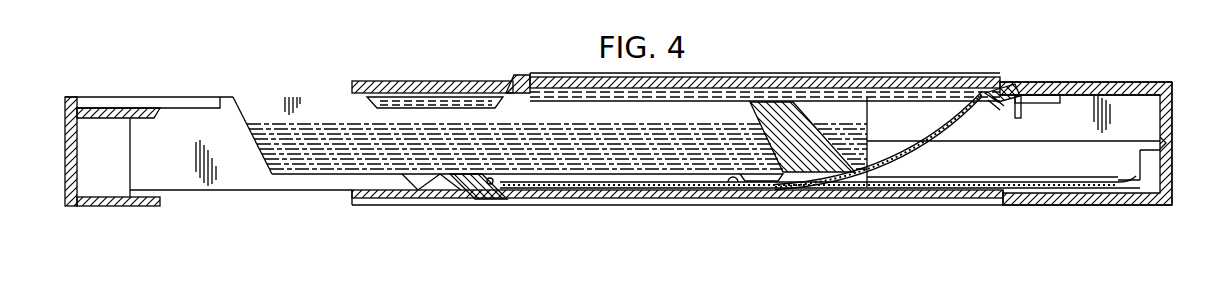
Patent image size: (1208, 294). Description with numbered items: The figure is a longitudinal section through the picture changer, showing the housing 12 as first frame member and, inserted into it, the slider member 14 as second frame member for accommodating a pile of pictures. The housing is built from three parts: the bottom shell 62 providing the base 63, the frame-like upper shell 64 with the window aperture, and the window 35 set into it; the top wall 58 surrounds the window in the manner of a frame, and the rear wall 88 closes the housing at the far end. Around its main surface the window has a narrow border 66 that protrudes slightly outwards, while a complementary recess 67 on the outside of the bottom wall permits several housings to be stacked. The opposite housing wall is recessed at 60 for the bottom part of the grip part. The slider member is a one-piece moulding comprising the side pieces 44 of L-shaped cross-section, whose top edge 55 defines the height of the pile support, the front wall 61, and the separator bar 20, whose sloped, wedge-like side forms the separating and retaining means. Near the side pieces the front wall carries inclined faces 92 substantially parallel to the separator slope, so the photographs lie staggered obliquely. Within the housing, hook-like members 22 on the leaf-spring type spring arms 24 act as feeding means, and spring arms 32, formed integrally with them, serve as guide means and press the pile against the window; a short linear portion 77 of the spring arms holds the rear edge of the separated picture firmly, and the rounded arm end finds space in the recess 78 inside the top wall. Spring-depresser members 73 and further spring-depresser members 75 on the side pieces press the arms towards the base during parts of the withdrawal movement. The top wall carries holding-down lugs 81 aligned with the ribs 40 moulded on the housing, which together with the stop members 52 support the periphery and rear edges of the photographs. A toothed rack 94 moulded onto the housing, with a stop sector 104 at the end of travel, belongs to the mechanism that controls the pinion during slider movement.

The housing 12 is at (1092, 78).
The slider member 14 is at (226, 196).
The separator bar 20 is at (826, 101).
The hook-like members 22 is at (487, 185).
The spring arms 24 is at (591, 189).
The spring arms 32 is at (924, 150).
The window 35 is at (790, 92).
The ribs 40 is at (1058, 104).
The side pieces 44 is at (314, 100).
The stop members 52 is at (1012, 119).
The top edge 55 is at (258, 97).
The top wall 58 is at (1042, 82).
The recess 60 is at (400, 200).
The front wall 61 is at (66, 160).
The bottom shell 62 is at (1101, 206).
The base 63 is at (857, 206).
The upper shell 64 is at (1128, 82).
The border 66 is at (515, 76).
The recess 67 is at (712, 182).
The spring-depresser members 73 is at (767, 181).
The spring-depresser members 75 is at (647, 181).
The linear portion 77 is at (996, 108).
The recess 78 is at (1004, 86).
The holding-down lugs 81 is at (432, 100).
The rear wall 88 is at (1173, 110).
The inclined faces 92 is at (240, 100).
The toothed rack 94 is at (1032, 189).
The stop sector 104 is at (1136, 160).